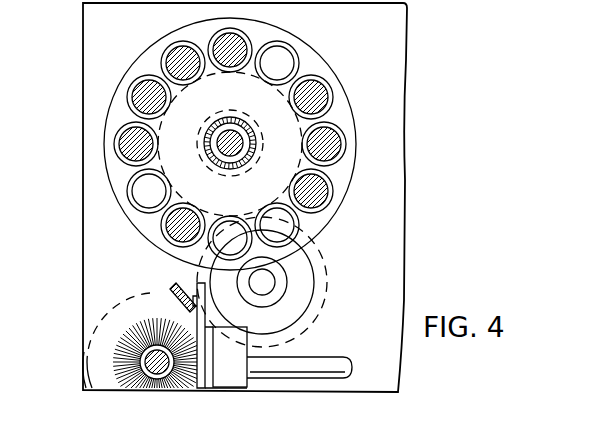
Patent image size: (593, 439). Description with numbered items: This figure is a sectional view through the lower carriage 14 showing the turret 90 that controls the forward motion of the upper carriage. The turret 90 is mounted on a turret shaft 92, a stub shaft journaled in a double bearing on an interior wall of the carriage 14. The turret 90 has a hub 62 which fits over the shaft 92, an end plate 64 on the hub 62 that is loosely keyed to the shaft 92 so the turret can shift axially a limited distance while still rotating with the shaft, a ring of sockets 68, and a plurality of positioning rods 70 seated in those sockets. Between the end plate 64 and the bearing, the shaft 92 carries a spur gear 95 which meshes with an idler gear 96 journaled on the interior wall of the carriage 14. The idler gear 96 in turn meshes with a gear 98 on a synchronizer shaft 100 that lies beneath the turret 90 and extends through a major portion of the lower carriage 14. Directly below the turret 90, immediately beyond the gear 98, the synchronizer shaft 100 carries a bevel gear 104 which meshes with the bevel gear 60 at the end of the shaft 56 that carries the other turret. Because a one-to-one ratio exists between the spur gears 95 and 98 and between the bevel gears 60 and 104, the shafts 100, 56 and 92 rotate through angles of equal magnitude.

The lower carriage 14 is at (410, 94).
The shaft 56 is at (330, 356).
The bevel gear 60 is at (172, 300).
The hub 62 is at (229, 170).
The end plate 64 is at (317, 62).
The sockets 68 is at (340, 84).
The positioning rods 70 is at (335, 194).
The turret 90 is at (121, 66).
The turret shaft 92 is at (234, 138).
The spur gear 95 is at (160, 166).
The idler gear 96 is at (300, 280).
The gear 98 is at (121, 318).
The synchronizer shaft 100 is at (150, 362).
The bevel gear 104 is at (118, 343).